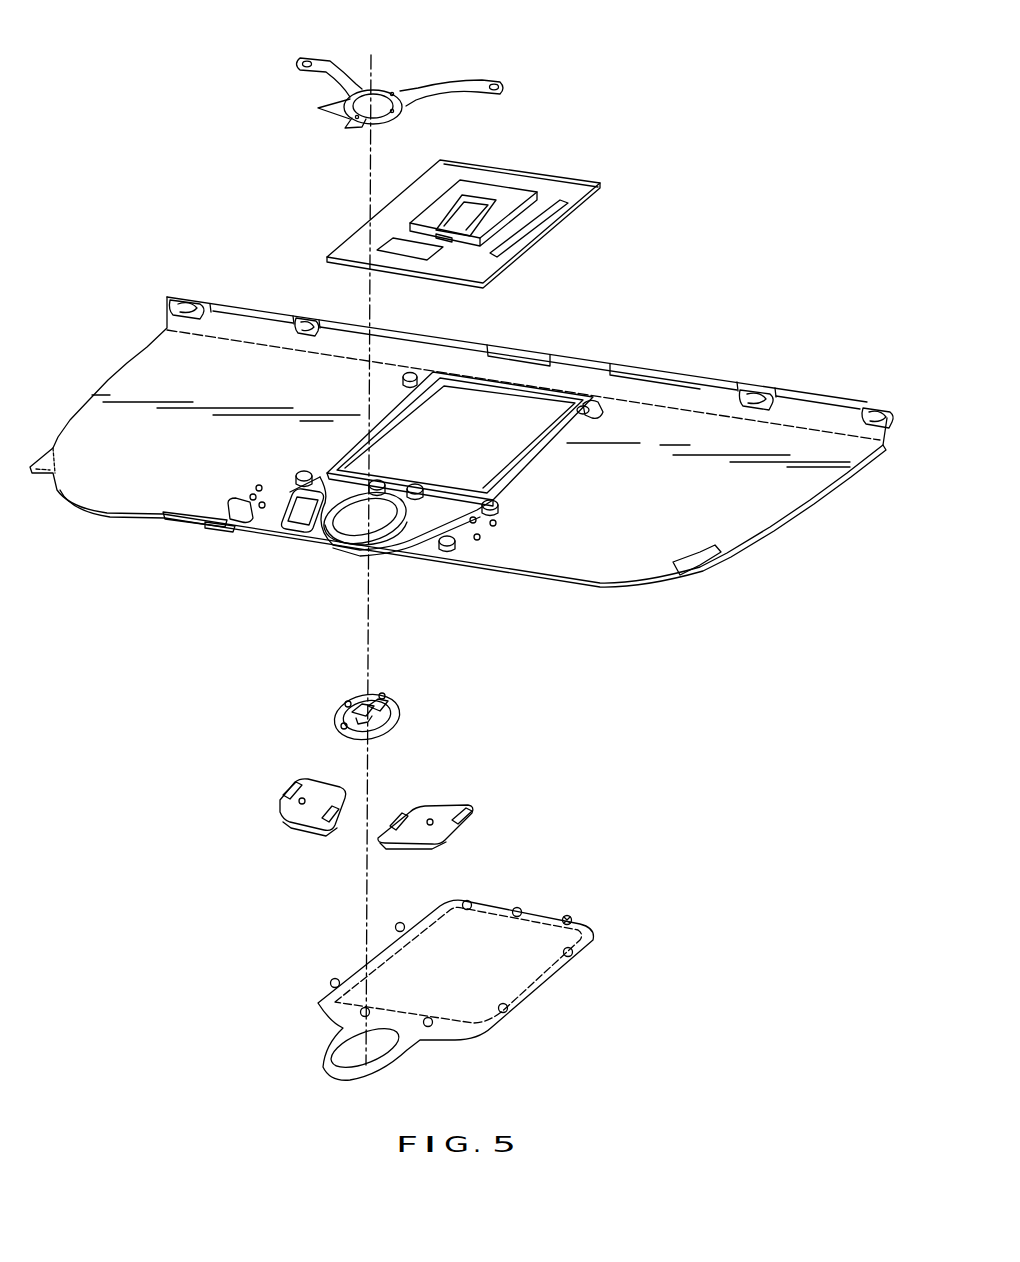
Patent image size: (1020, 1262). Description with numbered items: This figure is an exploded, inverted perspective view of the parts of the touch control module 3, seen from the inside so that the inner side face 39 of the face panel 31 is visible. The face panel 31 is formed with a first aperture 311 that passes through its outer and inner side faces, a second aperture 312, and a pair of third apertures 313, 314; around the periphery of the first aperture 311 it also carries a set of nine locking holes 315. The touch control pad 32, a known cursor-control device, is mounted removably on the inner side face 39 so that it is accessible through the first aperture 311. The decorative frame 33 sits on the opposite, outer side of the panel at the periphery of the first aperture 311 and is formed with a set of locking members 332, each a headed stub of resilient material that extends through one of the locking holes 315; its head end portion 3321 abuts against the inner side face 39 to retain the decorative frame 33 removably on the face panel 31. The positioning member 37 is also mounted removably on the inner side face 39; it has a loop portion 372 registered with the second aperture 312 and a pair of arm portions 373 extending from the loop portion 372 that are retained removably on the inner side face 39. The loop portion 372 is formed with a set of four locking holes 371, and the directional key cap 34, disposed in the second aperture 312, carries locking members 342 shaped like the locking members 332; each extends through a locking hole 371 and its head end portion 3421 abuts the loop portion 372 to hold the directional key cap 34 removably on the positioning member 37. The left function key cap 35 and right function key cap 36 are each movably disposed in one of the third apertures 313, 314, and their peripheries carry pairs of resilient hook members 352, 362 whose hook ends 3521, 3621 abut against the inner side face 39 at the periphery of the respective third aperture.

The touch control module 3 is at (630, 327).
The face panel 31 is at (827, 493).
The first aperture 311 is at (500, 410).
The second aperture 312 is at (357, 530).
The third aperture 313 is at (420, 533).
The third aperture 314 is at (300, 517).
The locking holes 315 is at (573, 420).
The inner side face 39 is at (747, 523).
The touch control pad 32 is at (483, 263).
The decorative frame 33 is at (505, 985).
The locking members 332 is at (512, 958).
The head end portion 3321 is at (571, 916).
The directional key cap 34 is at (382, 701).
The locking members 342 is at (345, 702).
The head end portion 3421 is at (395, 712).
The left function key cap 35 is at (472, 830).
The resilient hook members 352 is at (392, 815).
The hook end 3521 is at (473, 818).
The right function key cap 36 is at (284, 830).
The resilient hook members 362 is at (283, 793).
The hook end 3621 is at (333, 825).
The positioning member 37 is at (390, 95).
The locking holes 371 is at (340, 108).
The loop portion 372 is at (363, 124).
The arm portions 373 is at (370, 83).